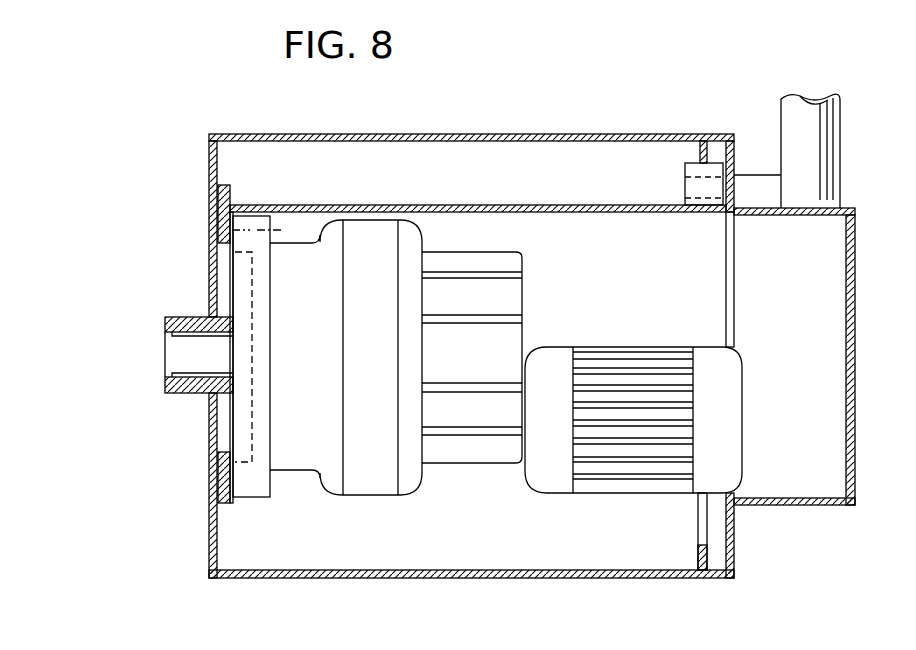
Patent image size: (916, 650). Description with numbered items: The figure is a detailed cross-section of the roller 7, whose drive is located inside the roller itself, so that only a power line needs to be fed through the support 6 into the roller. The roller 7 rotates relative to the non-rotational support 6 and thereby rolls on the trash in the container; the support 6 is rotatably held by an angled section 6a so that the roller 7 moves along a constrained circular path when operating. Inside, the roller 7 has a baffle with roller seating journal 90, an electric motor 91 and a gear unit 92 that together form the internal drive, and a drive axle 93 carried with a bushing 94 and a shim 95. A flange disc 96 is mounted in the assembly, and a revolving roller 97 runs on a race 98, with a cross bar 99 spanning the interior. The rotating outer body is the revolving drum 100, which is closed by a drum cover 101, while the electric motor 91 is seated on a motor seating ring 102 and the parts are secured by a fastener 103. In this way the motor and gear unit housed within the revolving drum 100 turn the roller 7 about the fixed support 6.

The roller 7 is at (480, 98).
The support 6 is at (834, 186).
The angled section 6a is at (855, 458).
The baffel with roller seating journal 90 is at (734, 525).
The electric motor 91 is at (655, 472).
The gear unit 92 is at (374, 470).
The drive axle 93 is at (176, 352).
The bushing 94 is at (181, 393).
The shim 95 is at (178, 318).
The flange disc 96 is at (263, 425).
The revolving roller 97 is at (685, 180).
The race 98 is at (700, 150).
The cross bar 99 is at (527, 205).
The revolving drum 100 is at (582, 133).
The drum cover 101 is at (210, 270).
The motor seating ring 102 is at (218, 207).
The fastener 103 is at (257, 230).